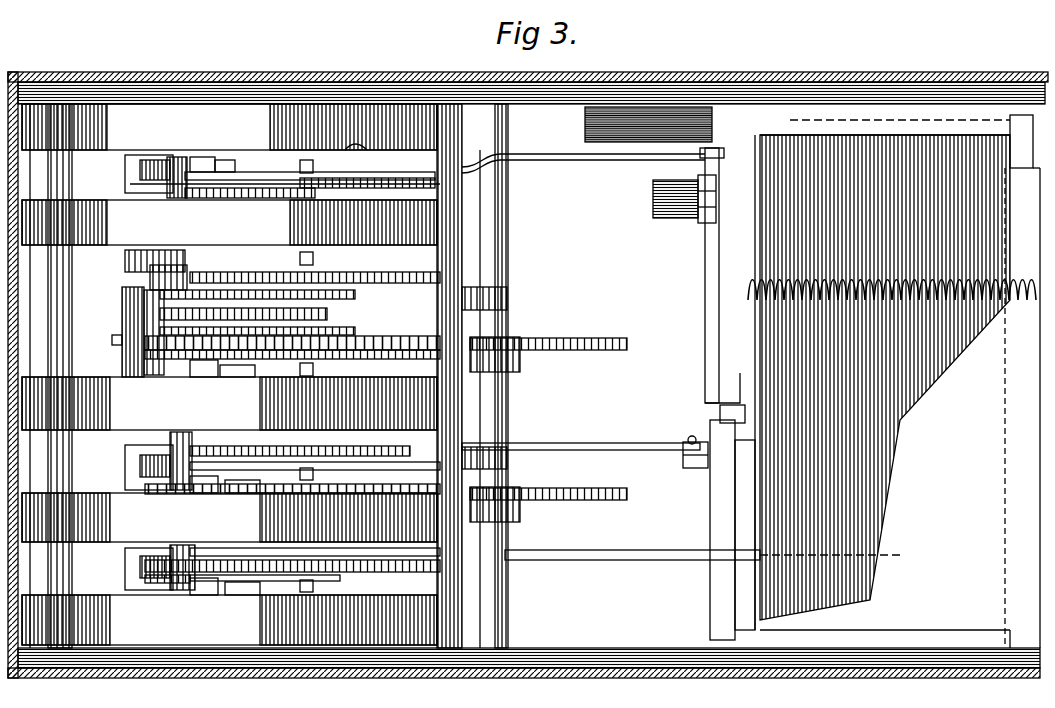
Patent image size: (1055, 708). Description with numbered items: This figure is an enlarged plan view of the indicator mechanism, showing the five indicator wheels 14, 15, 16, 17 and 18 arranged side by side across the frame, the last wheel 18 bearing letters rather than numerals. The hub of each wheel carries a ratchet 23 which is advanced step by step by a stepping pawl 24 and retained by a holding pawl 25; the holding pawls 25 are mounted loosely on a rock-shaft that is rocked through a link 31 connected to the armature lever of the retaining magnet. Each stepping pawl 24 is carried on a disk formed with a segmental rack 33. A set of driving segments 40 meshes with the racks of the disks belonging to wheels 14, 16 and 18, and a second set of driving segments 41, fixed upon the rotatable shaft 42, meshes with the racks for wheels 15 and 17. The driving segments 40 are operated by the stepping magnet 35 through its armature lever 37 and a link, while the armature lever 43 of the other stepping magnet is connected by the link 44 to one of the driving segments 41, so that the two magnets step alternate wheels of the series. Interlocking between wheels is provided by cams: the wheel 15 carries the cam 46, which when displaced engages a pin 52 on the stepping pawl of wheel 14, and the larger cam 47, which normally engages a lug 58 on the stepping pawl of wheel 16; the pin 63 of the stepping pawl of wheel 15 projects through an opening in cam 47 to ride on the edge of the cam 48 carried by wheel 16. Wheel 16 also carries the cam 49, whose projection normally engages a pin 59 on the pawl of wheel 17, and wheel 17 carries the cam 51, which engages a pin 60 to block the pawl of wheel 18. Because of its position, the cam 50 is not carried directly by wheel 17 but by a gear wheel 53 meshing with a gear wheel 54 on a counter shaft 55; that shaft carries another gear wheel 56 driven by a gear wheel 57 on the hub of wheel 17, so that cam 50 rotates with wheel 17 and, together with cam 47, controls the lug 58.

The indicator wheel 14 is at (229, 127).
The indicator wheel 15 is at (229, 222).
The indicator wheel 16 is at (229, 403).
The indicator wheel 17 is at (229, 517).
The indicator wheel 18 is at (229, 620).
The ratchet 23 is at (242, 607).
The stepping pawl 24 is at (126, 163).
The holding pawl 25 is at (319, 378).
The link 31 is at (600, 560).
The segmental rack 33 is at (260, 586).
The stepping magnet 35 is at (720, 150).
The armature lever 37 is at (715, 322).
The driving segment 40 is at (425, 373).
The driving segment 41 is at (315, 366).
The rotatable shaft 42 is at (463, 228).
The armature lever 43 is at (690, 468).
The link 44 is at (581, 435).
The cam 46 is at (218, 200).
The cam 47 is at (271, 301).
The cam 48 is at (254, 312).
The cam 49 is at (300, 442).
The cam 50 is at (274, 326).
The cam 51 is at (232, 548).
The pin 52 is at (175, 200).
The gear wheel 53 is at (112, 340).
The gear wheel 54 is at (548, 333).
The counter shaft 55 is at (509, 380).
The gear wheel 56 is at (548, 505).
The gear wheel 57 is at (292, 477).
The lug 58 is at (122, 312).
The pin 59 is at (180, 432).
The pin 60 is at (180, 545).
The pin 63 is at (150, 276).